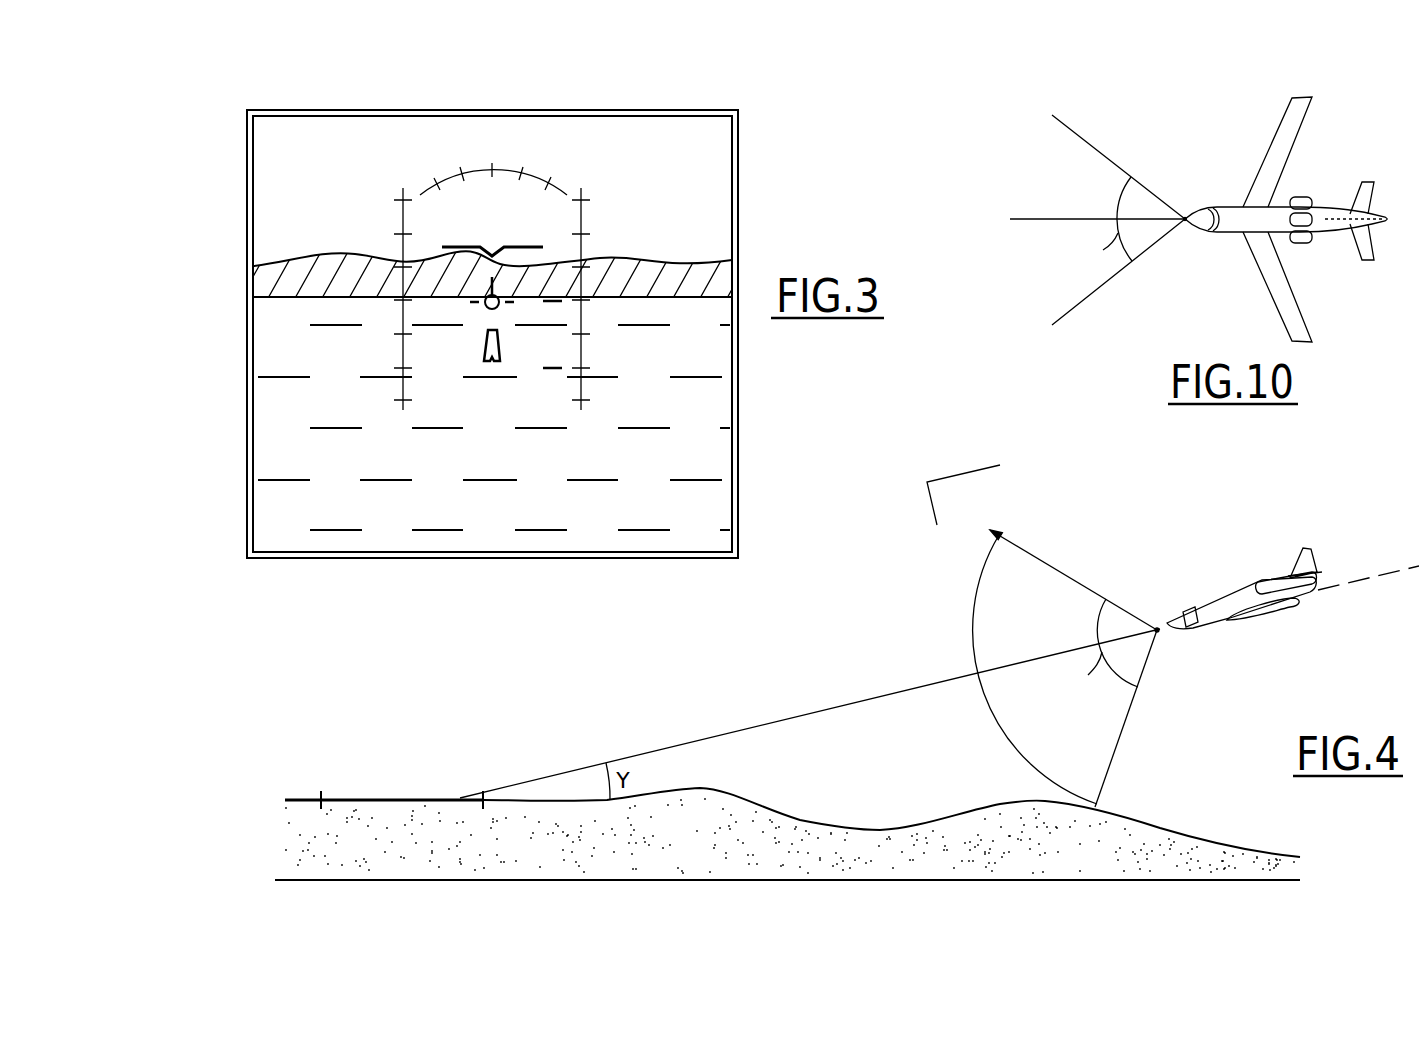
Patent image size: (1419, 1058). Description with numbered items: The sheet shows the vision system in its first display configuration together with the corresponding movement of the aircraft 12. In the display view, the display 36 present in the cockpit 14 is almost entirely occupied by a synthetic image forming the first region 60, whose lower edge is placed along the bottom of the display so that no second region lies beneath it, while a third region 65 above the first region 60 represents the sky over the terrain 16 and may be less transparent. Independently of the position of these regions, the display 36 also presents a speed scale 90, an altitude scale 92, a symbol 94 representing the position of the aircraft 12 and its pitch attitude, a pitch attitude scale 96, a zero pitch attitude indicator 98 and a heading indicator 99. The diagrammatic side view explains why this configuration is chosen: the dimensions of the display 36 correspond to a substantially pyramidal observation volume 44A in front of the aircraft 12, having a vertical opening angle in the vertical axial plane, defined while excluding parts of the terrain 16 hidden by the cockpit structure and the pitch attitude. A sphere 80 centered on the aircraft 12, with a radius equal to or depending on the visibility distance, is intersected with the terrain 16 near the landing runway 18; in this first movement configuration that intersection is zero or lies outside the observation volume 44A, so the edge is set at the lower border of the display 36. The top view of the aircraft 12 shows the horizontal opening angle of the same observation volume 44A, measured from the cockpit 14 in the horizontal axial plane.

In FIG. 10, the aircraft 12 is at (1340, 148).
In FIG. 4, the aircraft 12 is at (1237, 573).
In FIG. 10, the cockpit 14 is at (1185, 223).
In FIG. 4, the cockpit 14 is at (1157, 627).
In FIG. 4, the terrain 16 is at (703, 790).
In FIG. 3, the landing runway 18 is at (492, 363).
In FIG. 4, the landing runway 18 is at (392, 800).
In FIG. 3, the display 36 is at (740, 218).
In FIG. 10, the observation volume 44A is at (1080, 312).
In FIG. 4, the observation volume 44A is at (1112, 766).
In FIG. 3, the first region 60 is at (209, 107).
In FIG. 3, the third region 65 is at (277, 181).
In FIG. 4, the sphere 80 is at (973, 632).
In FIG. 3, the speed scale 90 is at (403, 383).
In FIG. 3, the altitude scale 92 is at (583, 353).
In FIG. 3, the symbol representing the position of the aircraft 94 is at (488, 310).
In FIG. 3, the pitch attitude scale 96 is at (552, 369).
In FIG. 3, the zero pitch attitude indicator 98 is at (457, 245).
In FIG. 3, the heading indicator 99 is at (522, 172).